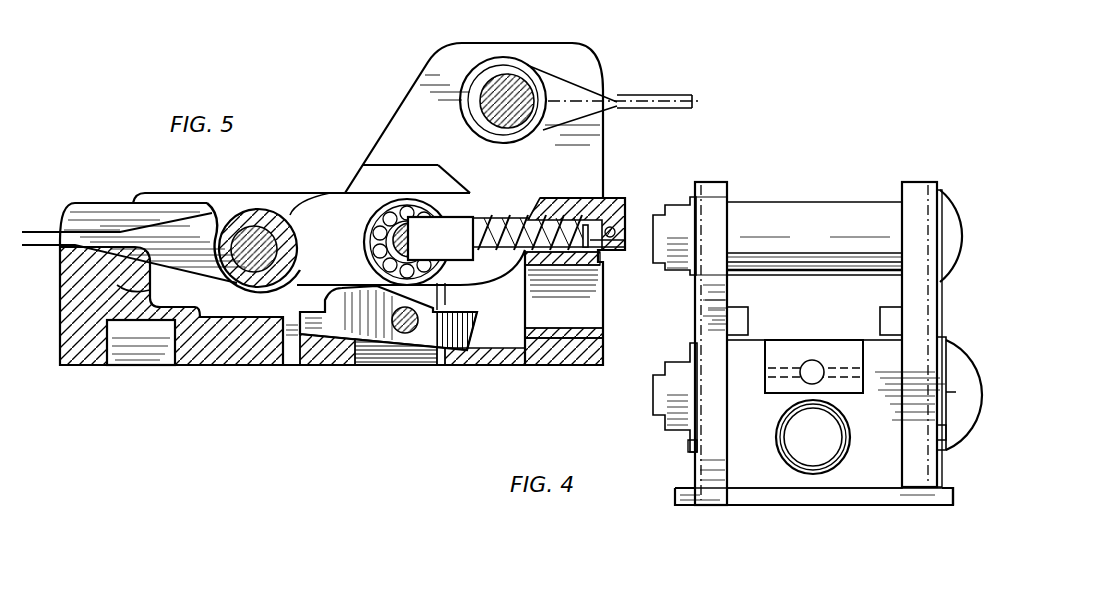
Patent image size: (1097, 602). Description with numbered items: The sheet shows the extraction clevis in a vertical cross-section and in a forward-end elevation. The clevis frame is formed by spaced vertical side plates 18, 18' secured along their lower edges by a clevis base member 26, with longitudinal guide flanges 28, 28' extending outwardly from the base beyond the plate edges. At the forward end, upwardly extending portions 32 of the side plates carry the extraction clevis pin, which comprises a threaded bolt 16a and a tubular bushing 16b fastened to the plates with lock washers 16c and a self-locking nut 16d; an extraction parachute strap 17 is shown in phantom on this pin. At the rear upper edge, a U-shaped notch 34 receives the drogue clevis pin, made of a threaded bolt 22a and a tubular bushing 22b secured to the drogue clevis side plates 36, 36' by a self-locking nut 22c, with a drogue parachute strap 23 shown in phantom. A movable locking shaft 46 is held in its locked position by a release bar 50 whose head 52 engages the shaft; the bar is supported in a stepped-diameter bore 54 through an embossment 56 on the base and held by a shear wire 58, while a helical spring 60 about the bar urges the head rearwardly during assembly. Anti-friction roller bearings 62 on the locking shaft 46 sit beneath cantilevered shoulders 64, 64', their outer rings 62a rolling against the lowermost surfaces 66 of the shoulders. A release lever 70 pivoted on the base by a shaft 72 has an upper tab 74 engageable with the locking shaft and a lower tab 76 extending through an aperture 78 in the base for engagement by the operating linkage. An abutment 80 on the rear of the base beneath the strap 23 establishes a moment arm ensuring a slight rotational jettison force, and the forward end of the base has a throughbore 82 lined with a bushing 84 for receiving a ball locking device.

In FIG. 5, the threaded bolt 16a is at (497, 90).
In FIG. 4, the threaded bolt 16a is at (942, 222).
In FIG. 5, the tubular bushing 16b is at (532, 70).
In FIG. 4, the tubular bushing 16b is at (800, 212).
In FIG. 4, the lock washers 16c is at (685, 278).
In FIG. 4, the self-locking nut 16d is at (675, 216).
In FIG. 5, the strap 17 is at (656, 96).
In FIG. 5, the side plate 18 is at (321, 262).
In FIG. 4, the side plate 18 is at (904, 319).
In FIG. 4, the side plate 18' is at (731, 328).
In FIG. 5, the threaded bolt 22a is at (272, 255).
In FIG. 4, the threaded bolt 22a is at (936, 386).
In FIG. 5, the tubular bushing 22b is at (266, 212).
In FIG. 4, the self-locking nut 22c is at (656, 397).
In FIG. 5, the strap 23 is at (118, 228).
In FIG. 5, the clevis base member 26 is at (270, 352).
In FIG. 4, the clevis base member 26 is at (765, 480).
In FIG. 4, the longitudinal guide flange 28 is at (936, 515).
In FIG. 4, the longitudinal guide flange 28' is at (789, 492).
In FIG. 5, the upwardly extending portion 32 is at (435, 66).
In FIG. 5, the U-shaped notch 34 is at (235, 213).
In FIG. 4, the drogue clevis side plate 36 is at (907, 443).
In FIG. 4, the drogue clevis side plate 36' is at (672, 450).
In FIG. 5, the locking shaft 46 is at (420, 237).
In FIG. 5, the release bar 50 is at (506, 230).
In FIG. 4, the release bar 50 is at (812, 360).
In FIG. 5, the head 52 is at (457, 217).
In FIG. 5, the stepped-diameter bore 54 is at (580, 214).
In FIG. 5, the embossment 56 is at (610, 197).
In FIG. 4, the embossment 56 is at (852, 364).
In FIG. 5, the shear wire 58 is at (607, 254).
In FIG. 4, the shear wire 58 is at (782, 370).
In FIG. 5, the helical spring 60 is at (512, 246).
In FIG. 5, the anti-friction roller bearing 62 is at (361, 264).
In FIG. 5, the outer ring 62a is at (455, 192).
In FIG. 5, the shoulder 64 is at (301, 166).
In FIG. 4, the shoulder 64 is at (757, 310).
In FIG. 4, the shoulder 64' is at (867, 310).
In FIG. 5, the lowermost surface 66 is at (368, 203).
In FIG. 5, the release lever 70 is at (390, 340).
In FIG. 5, the shaft 72 is at (410, 326).
In FIG. 5, the upper tab 74 is at (314, 350).
In FIG. 5, the lower tab 76 is at (468, 329).
In FIG. 5, the aperture 78 is at (462, 356).
In FIG. 5, the abutment 80 is at (135, 290).
In FIG. 5, the throughbore 82 is at (555, 302).
In FIG. 4, the throughbore 82 is at (797, 437).
In FIG. 5, the bushing 84 is at (603, 336).
In FIG. 4, the bushing 84 is at (838, 460).